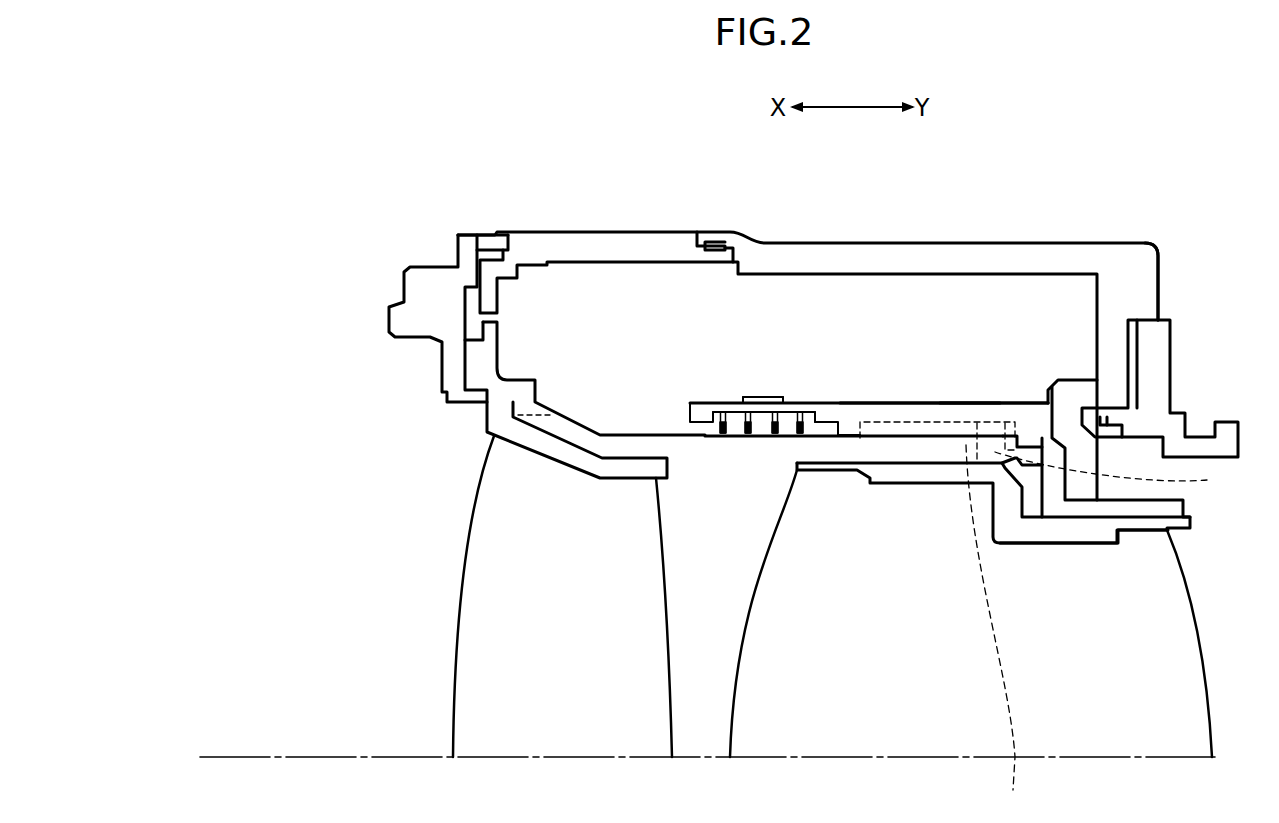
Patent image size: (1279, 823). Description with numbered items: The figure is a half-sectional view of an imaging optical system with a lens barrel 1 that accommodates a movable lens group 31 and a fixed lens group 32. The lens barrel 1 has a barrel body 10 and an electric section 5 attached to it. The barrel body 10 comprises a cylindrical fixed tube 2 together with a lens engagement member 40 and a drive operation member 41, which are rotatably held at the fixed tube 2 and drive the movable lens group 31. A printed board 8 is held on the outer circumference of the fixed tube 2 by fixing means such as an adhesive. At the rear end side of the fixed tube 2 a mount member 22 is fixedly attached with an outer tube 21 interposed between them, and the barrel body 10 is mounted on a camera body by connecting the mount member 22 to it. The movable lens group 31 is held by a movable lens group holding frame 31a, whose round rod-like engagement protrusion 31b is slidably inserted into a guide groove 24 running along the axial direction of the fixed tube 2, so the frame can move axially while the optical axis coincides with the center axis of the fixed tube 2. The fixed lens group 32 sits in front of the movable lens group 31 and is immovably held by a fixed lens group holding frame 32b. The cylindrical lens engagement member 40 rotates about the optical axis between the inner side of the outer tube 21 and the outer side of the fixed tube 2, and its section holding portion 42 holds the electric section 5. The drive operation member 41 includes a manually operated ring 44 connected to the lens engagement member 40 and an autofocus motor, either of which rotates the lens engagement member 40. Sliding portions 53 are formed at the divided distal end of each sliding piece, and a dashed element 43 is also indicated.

The lens barrel 1 is at (1203, 205).
The fixed tube 2 is at (950, 450).
The electric section 5 is at (795, 403).
The printed board 8 is at (737, 437).
The barrel body 10 is at (965, 223).
The outer tube 21 is at (1095, 242).
The mount member 22 is at (1158, 362).
The guide groove 24 is at (998, 631).
The movable lens group 31 is at (898, 735).
The movable lens group holding frame 31a is at (1087, 537).
The engagement protrusion 31b is at (1125, 474).
The fixed lens group 32 is at (592, 740).
The fixed lens group holding frame 32b is at (550, 443).
The lens engagement member 40 is at (878, 403).
The drive operation member 41 is at (557, 232).
The section holding portion 42 is at (738, 400).
The opening 43 is at (927, 422).
The manually operated ring 44 is at (557, 232).
The sliding portion 53 is at (722, 437).